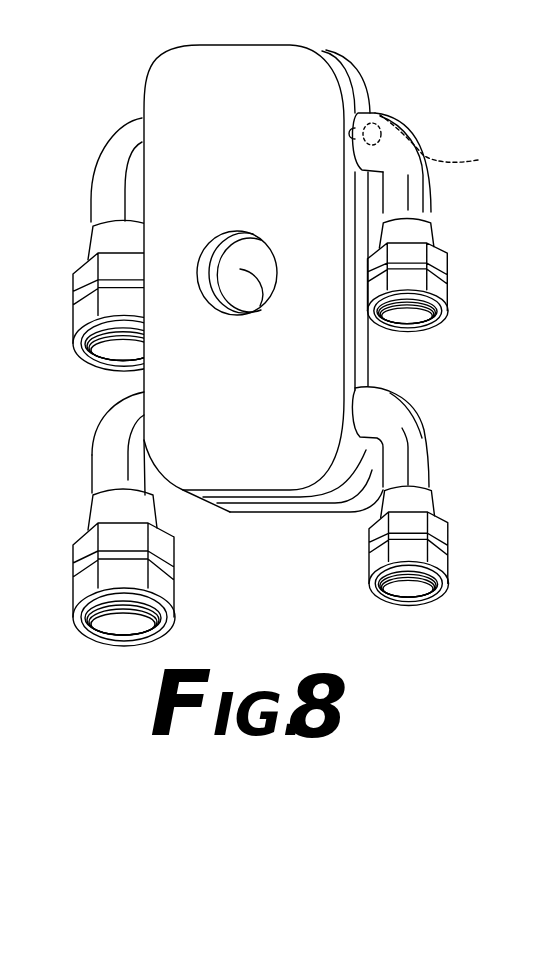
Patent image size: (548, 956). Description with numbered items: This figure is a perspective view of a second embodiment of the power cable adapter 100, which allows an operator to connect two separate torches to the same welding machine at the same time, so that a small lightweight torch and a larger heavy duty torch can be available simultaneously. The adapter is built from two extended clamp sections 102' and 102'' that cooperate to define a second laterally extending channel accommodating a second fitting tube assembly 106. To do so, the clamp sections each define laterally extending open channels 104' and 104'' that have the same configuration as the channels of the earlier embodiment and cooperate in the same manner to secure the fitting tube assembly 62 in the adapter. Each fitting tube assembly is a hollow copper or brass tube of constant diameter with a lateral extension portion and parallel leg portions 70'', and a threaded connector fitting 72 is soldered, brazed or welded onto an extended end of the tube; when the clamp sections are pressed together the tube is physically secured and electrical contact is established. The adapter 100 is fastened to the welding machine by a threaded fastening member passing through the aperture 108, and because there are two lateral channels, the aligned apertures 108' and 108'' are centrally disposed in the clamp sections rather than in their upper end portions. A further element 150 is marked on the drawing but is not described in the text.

The fitting tube assembly 62 is at (110, 397).
The parallel leg portions 70'' is at (87, 456).
The threaded connector fitting 72 is at (73, 548).
The power cable adapter 100 is at (449, 358).
The clamp section 102' is at (341, 274).
The clamp section 102'' is at (357, 281).
The laterally extending open channel 104' is at (320, 142).
The laterally extending open channel 104'' is at (452, 143).
The second fitting tube assembly 106 is at (113, 122).
The aperture 108 is at (221, 236).
The aperture 108' is at (252, 245).
The aperture 108'' is at (281, 304).
The component 150 is at (540, 271).